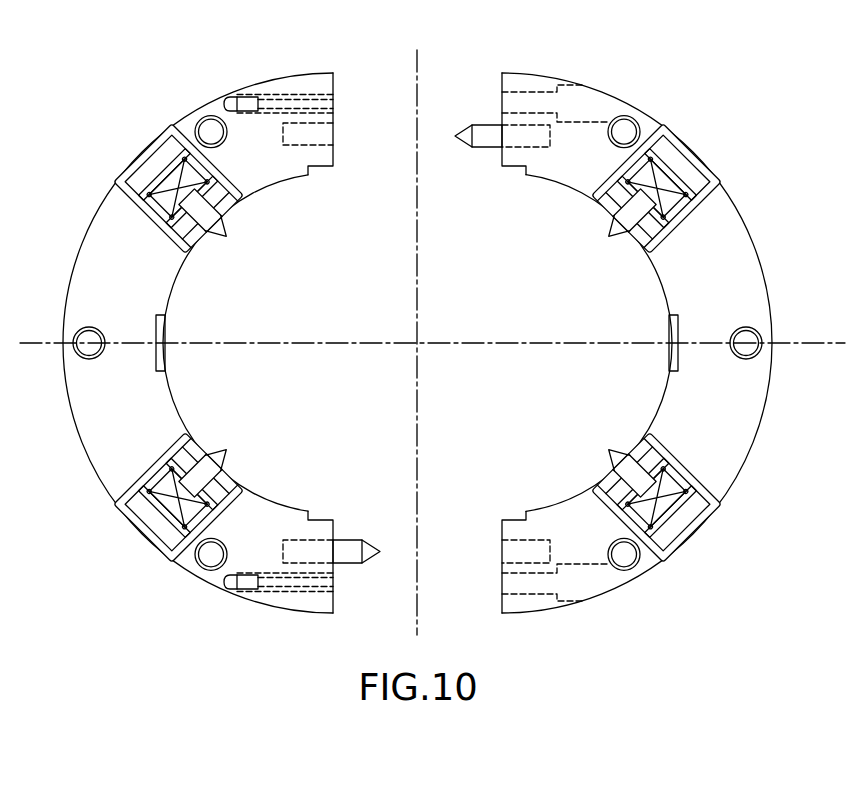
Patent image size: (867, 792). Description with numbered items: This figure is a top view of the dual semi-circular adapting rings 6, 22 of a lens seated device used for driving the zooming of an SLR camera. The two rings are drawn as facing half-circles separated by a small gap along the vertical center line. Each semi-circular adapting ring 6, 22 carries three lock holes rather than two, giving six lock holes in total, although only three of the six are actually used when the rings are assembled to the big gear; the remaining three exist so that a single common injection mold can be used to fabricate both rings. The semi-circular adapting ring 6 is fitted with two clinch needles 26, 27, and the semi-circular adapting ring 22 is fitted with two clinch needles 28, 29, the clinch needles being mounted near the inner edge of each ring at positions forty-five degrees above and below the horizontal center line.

The semi-circular adapting ring 6 is at (117, 150).
The semi-circular adapting ring 22 is at (713, 150).
The clinch needle 26 is at (205, 462).
The clinch needle 27 is at (204, 220).
The clinch needle 28 is at (626, 462).
The clinch needle 29 is at (630, 220).